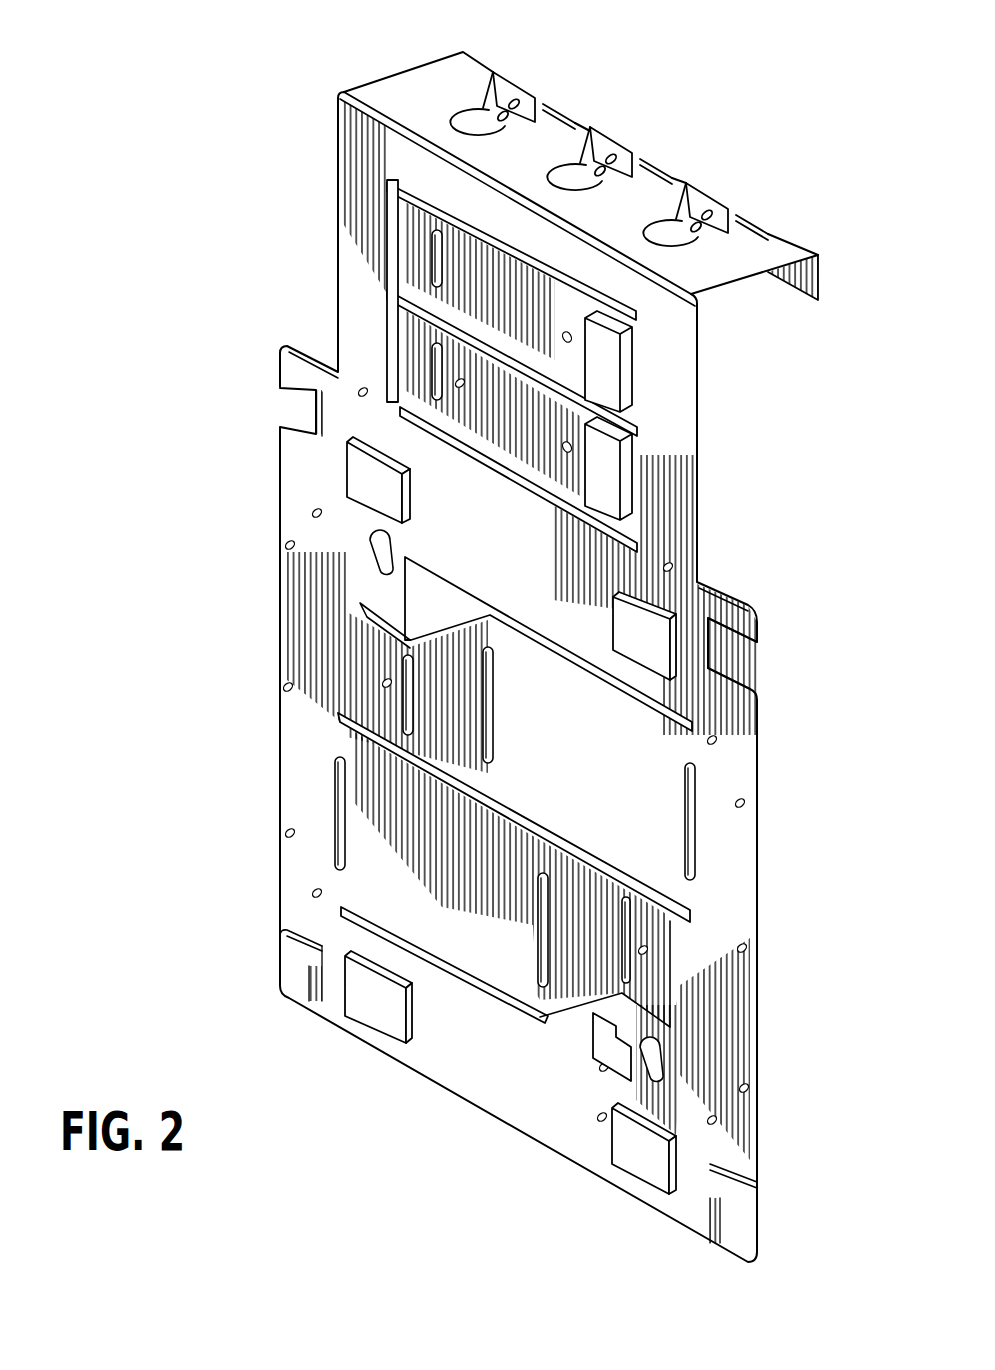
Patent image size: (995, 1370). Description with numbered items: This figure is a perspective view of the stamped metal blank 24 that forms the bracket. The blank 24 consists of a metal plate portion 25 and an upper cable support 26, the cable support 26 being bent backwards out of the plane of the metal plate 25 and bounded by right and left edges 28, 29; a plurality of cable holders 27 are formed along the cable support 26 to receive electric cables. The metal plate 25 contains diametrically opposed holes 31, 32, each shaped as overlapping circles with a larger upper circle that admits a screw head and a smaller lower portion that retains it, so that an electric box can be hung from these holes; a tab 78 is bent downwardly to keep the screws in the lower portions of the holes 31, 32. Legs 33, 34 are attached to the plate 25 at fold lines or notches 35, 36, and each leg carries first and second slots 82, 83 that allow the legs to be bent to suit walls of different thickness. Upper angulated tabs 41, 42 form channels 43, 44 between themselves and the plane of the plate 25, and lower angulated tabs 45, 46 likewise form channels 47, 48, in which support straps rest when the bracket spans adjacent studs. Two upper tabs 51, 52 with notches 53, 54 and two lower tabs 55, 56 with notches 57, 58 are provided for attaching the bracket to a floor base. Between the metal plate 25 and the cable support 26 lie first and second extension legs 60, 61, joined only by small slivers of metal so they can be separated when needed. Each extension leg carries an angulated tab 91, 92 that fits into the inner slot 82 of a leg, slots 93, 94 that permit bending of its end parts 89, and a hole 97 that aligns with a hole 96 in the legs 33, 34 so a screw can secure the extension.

The stamped blank 24 is at (243, 197).
The metal plate portion 25 is at (504, 572).
The upper cable support 26 is at (502, 170).
The cable holders 27 is at (497, 76).
The right edge 28 is at (380, 82).
The left edge 29 is at (744, 284).
The hole 31 is at (391, 543).
The hole 32 is at (638, 1066).
The leg 33 is at (564, 761).
The leg 34 is at (392, 910).
The fold line or notch 35 is at (694, 812).
The fold line or notch 36 is at (334, 771).
The upper angulated tab 41 is at (360, 504).
The upper angulated tab 42 is at (625, 652).
The channel 43 is at (412, 519).
The channel 44 is at (673, 612).
The lower angulated tab 45 is at (360, 1014).
The lower angulated tab 46 is at (625, 1169).
The channel 47 is at (412, 1022).
The channel 48 is at (673, 1180).
The upper tab 51 is at (293, 383).
The upper tab 52 is at (758, 627).
The notch 53 is at (308, 409).
The notch 54 is at (716, 641).
The lower tab 55 is at (292, 967).
The lower tab 56 is at (740, 1221).
The notch 57 is at (321, 1010).
The notch 58 is at (716, 1238).
The first extension leg 60 is at (508, 315).
The second extension leg 61 is at (502, 425).
The tab 78 is at (586, 1032).
The first slot 82 is at (420, 650).
The second slot 83 is at (497, 677).
The end parts 89 is at (412, 249).
The angulated tab 91 is at (605, 372).
The angulated tab 92 is at (605, 484).
The slot 93 is at (446, 265).
The slot 94 is at (422, 388).
The hole 96 is at (389, 696).
The hole 97 is at (560, 332).